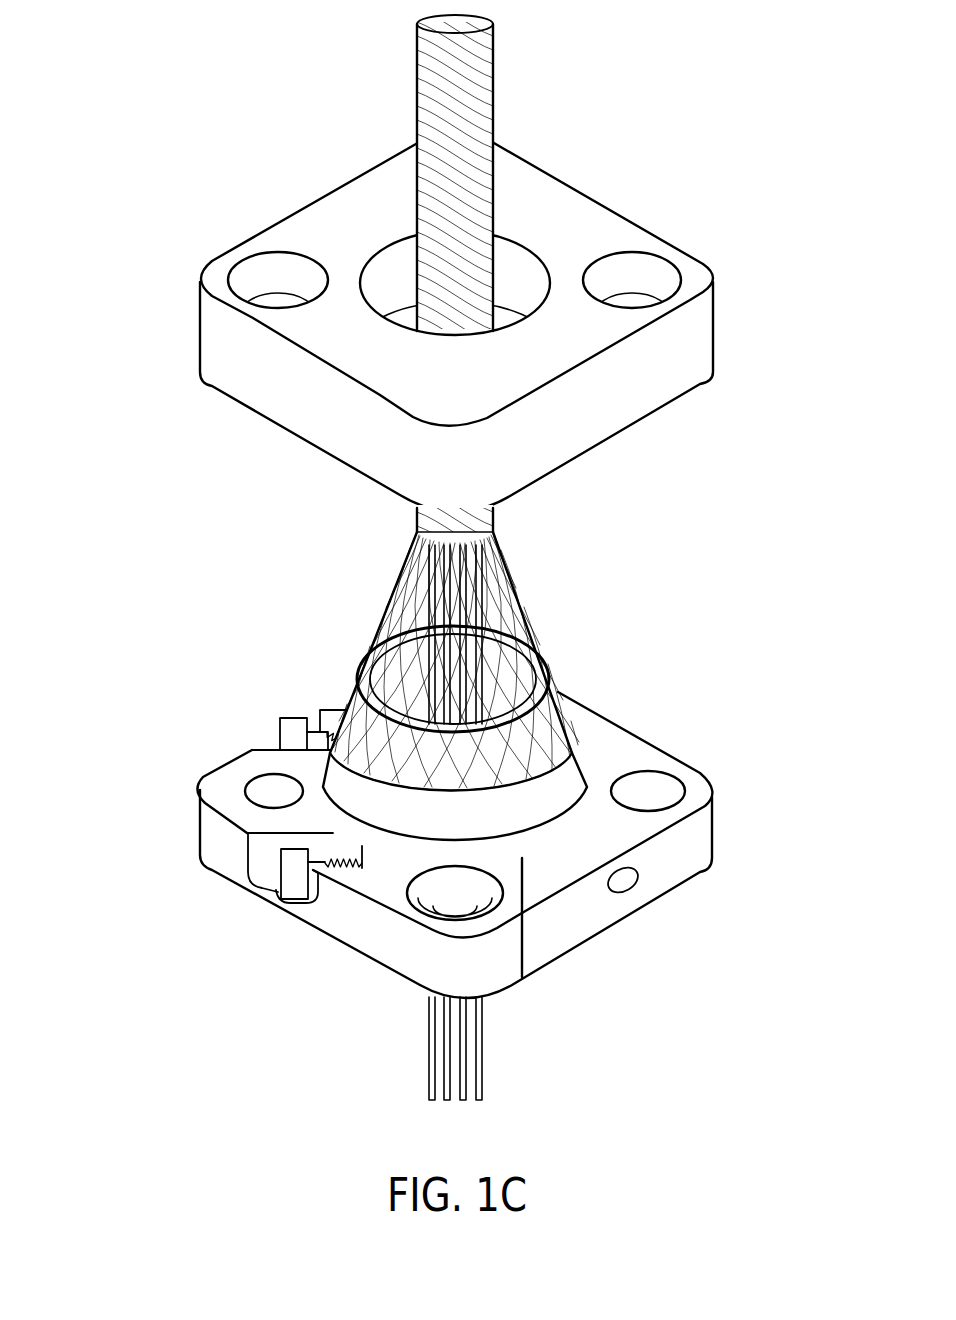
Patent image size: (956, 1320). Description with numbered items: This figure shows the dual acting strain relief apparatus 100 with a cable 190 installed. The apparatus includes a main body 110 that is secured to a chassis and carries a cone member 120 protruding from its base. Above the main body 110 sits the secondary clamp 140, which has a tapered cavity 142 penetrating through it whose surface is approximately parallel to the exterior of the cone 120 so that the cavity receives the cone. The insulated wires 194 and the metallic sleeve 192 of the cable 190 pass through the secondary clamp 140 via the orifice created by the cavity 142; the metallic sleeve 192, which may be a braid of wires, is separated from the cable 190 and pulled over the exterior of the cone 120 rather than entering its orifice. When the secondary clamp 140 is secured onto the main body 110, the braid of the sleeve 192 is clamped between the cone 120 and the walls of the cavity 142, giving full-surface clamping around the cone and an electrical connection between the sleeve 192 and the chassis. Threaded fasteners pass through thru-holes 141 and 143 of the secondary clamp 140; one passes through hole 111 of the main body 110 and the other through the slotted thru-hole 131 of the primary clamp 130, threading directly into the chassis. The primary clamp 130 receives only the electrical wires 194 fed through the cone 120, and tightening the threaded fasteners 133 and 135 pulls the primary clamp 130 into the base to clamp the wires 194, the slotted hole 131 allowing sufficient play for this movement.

The dual acting strain relief apparatus 100 is at (704, 92).
The main body 110 is at (186, 761).
The hole 111 is at (263, 787).
The cone member 120 is at (570, 757).
The primary clamp 130 is at (689, 705).
The slotted thru-hole 131 is at (666, 785).
The threaded fastener 133 is at (280, 873).
The threaded fastener 135 is at (288, 718).
The secondary clamp 140 is at (316, 181).
The thru-hole 141 is at (250, 277).
The tapered cavity 142 is at (518, 257).
The thru-hole 143 is at (665, 277).
The cable 190 is at (432, 82).
The metallic sleeve 192 is at (400, 572).
The insulated wires 194 is at (429, 1050).